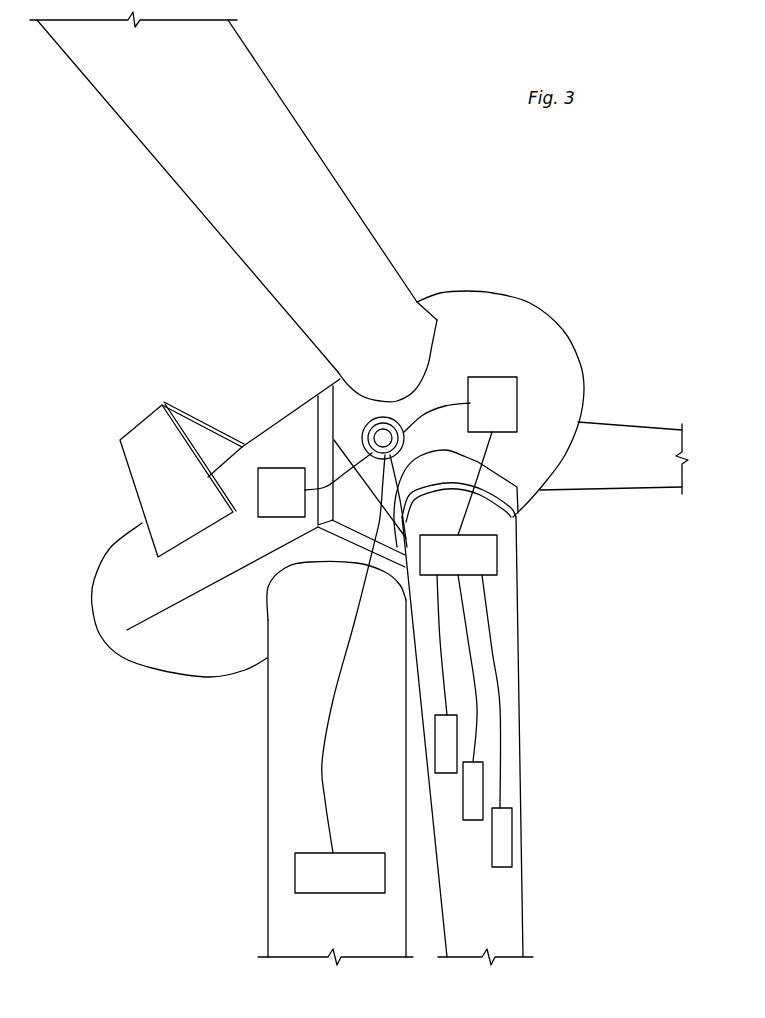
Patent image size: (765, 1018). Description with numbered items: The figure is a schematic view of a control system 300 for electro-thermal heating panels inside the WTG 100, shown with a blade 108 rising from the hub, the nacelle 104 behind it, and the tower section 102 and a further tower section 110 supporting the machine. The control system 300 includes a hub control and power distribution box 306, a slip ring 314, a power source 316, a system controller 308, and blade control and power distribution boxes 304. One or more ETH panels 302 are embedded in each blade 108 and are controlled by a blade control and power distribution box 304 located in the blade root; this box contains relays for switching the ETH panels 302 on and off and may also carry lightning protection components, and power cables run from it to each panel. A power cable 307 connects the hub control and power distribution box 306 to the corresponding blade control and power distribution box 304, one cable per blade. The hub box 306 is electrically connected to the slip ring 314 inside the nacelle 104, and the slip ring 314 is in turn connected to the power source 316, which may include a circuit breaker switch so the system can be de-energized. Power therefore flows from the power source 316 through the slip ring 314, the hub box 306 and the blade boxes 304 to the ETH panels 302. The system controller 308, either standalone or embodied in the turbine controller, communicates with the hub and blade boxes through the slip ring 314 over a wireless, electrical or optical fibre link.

The WTG 100 is at (217, 330).
The tower 102 is at (267, 788).
The nacelle 104 is at (160, 658).
The blade 108 is at (517, 667).
The hub 110 is at (560, 340).
The control system 300 is at (492, 290).
The ETH panel 302 is at (437, 773).
The blade control and power distribution box 304 is at (500, 553).
The hub control and power distribution box 306 is at (492, 377).
The power cable 307 is at (489, 450).
The system controller 308 is at (362, 893).
The slip ring 314 is at (363, 419).
The power source 316 is at (277, 477).